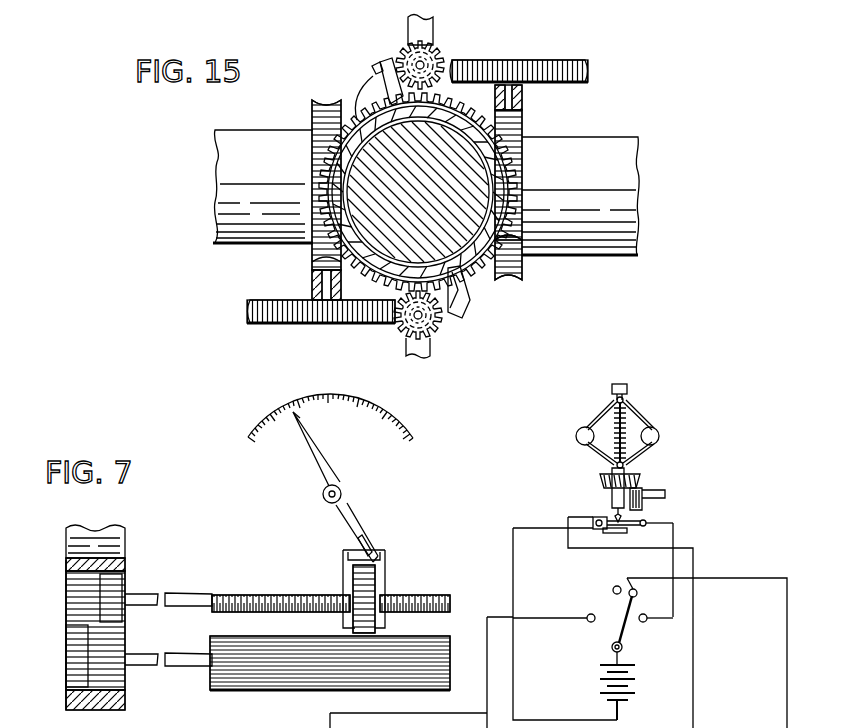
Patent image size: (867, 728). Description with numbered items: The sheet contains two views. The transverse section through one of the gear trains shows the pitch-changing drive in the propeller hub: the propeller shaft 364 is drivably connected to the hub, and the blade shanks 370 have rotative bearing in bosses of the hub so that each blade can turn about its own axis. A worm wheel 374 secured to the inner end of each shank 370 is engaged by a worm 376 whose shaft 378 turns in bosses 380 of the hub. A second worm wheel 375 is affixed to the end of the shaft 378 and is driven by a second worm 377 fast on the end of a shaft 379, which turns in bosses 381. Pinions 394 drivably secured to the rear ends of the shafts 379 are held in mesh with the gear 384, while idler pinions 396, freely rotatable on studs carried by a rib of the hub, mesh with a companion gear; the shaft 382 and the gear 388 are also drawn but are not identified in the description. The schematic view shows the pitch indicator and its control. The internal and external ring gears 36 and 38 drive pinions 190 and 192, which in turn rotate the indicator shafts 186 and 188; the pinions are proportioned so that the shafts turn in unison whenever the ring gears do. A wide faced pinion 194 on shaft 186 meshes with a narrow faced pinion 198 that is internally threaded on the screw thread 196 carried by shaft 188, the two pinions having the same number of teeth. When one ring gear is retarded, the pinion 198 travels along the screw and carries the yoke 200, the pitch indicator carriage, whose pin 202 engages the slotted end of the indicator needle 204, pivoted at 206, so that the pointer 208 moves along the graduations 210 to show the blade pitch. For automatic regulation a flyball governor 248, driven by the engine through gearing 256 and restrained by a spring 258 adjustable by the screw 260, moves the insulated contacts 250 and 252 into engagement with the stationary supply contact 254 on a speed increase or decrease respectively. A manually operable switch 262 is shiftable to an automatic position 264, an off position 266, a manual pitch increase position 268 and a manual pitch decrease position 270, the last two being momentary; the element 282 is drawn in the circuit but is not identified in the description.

In FIG. 15, the shank 370 is at (246, 247).
In FIG. 15, the worm wheel 374 is at (312, 120).
In FIG. 15, the second worm wheel 375 is at (590, 76).
In FIG. 15, the worm 376 is at (522, 175).
In FIG. 15, the second worm 377 is at (389, 58).
In FIG. 15, the worm shaft 378 is at (527, 97).
In FIG. 15, the shaft 379 is at (426, 318).
In FIG. 15, the boss 380 is at (530, 121).
In FIG. 15, the boss 381 is at (434, 28).
In FIG. 15, the lower transverse shaft 382 is at (372, 252).
In FIG. 15, the gear 384 is at (357, 120).
In FIG. 15, the main gear wheel 388 is at (452, 130).
In FIG. 15, the pinion 394 is at (441, 55).
In FIG. 15, the idler pinion 396 is at (373, 67).
In FIG. 15, the propeller shaft 364 is at (466, 295).
In FIG. 7, the internal ring gear 36 is at (121, 701).
In FIG. 7, the external ring gear 38 is at (125, 565).
In FIG. 7, the indicator shaft 186 is at (196, 666).
In FIG. 7, the indicator shaft 188 is at (202, 597).
In FIG. 7, the pinion 190 is at (66, 665).
In FIG. 7, the pinion 192 is at (128, 580).
In FIG. 7, the wide faced pinion 194 is at (277, 692).
In FIG. 7, the screw thread 196 is at (260, 597).
In FIG. 7, the narrow faced pinion 198 is at (378, 635).
In FIG. 7, the yoke 200 is at (388, 568).
In FIG. 7, the pin 202 is at (386, 552).
In FIG. 7, the indicator needle 204 is at (354, 511).
In FIG. 7, the pivot 206 is at (343, 493).
In FIG. 7, the pointer 208 is at (300, 414).
In FIG. 7, the graduations 210 is at (412, 420).
In FIG. 7, the flyball governor 248 is at (660, 437).
In FIG. 7, the automatic pitch increase contact 250 is at (606, 514).
In FIG. 7, the automatic pitch decrease contact 252 is at (620, 547).
In FIG. 7, the automatic current supply contact 254 is at (646, 520).
In FIG. 7, the gearing 256 is at (642, 480).
In FIG. 7, the spring 258 is at (628, 418).
In FIG. 7, the screw 260 is at (630, 389).
In FIG. 7, the manually operable switch 262 is at (624, 644).
In FIG. 7, the automatic supply contact 264 is at (655, 610).
In FIG. 7, the off position 266 is at (623, 580).
In FIG. 7, the manual pitch increase contact 268 is at (612, 590).
In FIG. 7, the manual pitch decrease contact 270 is at (591, 623).
In FIG. 7, the battery 282 is at (628, 697).